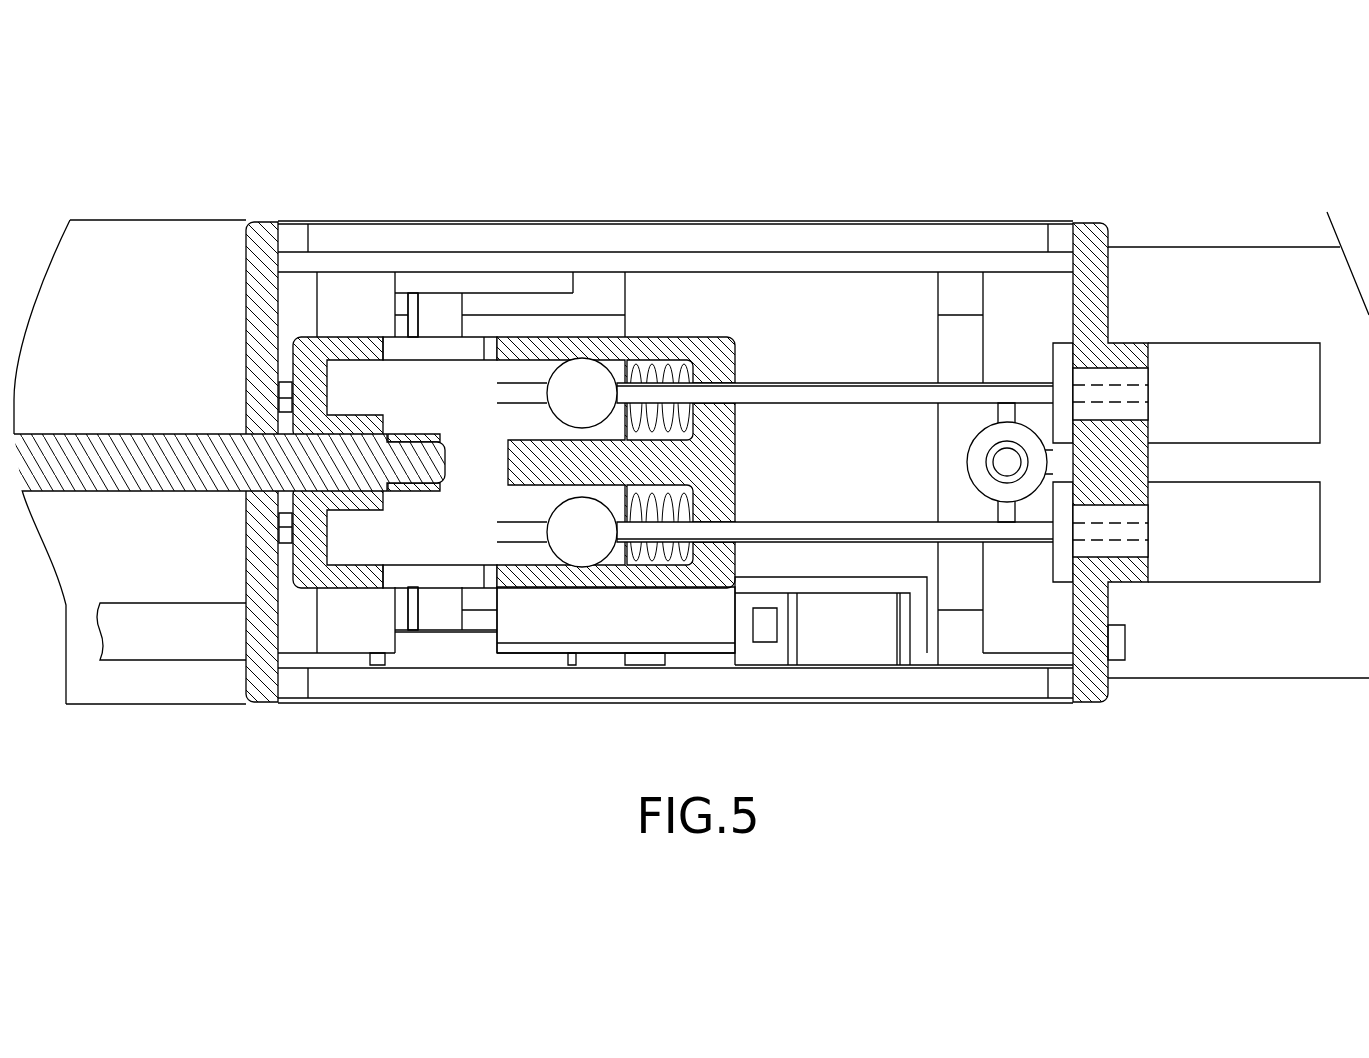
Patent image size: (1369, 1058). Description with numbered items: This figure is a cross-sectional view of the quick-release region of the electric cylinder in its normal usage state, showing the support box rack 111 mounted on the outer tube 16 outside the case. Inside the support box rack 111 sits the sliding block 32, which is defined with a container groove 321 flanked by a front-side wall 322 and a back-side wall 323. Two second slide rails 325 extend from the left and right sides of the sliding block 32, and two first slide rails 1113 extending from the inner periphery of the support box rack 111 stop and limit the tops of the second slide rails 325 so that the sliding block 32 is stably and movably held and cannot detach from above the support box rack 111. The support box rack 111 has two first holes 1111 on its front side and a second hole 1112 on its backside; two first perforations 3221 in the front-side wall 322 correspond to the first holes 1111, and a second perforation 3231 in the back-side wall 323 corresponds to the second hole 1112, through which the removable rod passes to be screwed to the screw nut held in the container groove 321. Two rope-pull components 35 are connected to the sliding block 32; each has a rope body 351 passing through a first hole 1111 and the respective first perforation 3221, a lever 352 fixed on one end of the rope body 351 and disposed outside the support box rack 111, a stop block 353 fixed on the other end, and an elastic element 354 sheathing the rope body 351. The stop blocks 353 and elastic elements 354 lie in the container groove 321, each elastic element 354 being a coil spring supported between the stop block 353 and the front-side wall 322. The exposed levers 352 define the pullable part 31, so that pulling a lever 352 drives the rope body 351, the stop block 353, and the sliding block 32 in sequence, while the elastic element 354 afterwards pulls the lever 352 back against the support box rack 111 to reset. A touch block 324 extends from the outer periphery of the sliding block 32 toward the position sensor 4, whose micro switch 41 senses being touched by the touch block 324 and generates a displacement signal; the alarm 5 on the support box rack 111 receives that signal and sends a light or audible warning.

The outer tube 16 is at (1224, 658).
The support box rack 111 is at (1139, 410).
The first hole 1111 is at (1150, 365).
The second hole 1112 is at (250, 440).
The first slide rail 1113 is at (518, 285).
The pullable part 31 is at (1252, 343).
The sliding block 32 is at (512, 381).
The container groove 321 is at (452, 378).
The front-side wall 322 is at (677, 382).
The first perforation 3221 is at (737, 392).
The back-side wall 323 is at (303, 370).
The second perforation 3231 is at (276, 470).
The touch block 324 is at (600, 625).
The second slide rail 325 is at (437, 305).
The rope-pull component 35 is at (785, 463).
The rope body 351 is at (820, 388).
The lever 352 is at (1228, 362).
The stop block 353 is at (585, 377).
The elastic element 354 is at (643, 327).
The position sensor 4 is at (904, 672).
The micro switch 41 is at (763, 628).
The alarm 5 is at (1118, 644).